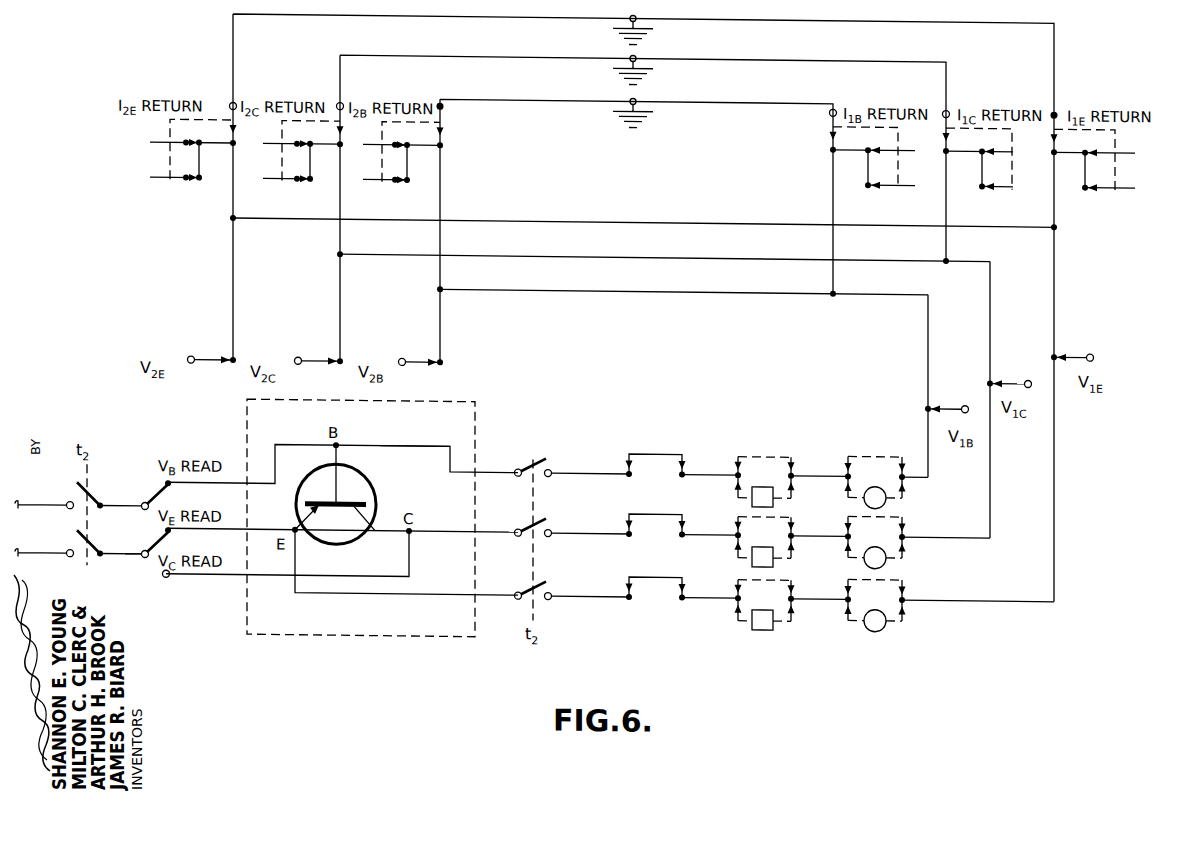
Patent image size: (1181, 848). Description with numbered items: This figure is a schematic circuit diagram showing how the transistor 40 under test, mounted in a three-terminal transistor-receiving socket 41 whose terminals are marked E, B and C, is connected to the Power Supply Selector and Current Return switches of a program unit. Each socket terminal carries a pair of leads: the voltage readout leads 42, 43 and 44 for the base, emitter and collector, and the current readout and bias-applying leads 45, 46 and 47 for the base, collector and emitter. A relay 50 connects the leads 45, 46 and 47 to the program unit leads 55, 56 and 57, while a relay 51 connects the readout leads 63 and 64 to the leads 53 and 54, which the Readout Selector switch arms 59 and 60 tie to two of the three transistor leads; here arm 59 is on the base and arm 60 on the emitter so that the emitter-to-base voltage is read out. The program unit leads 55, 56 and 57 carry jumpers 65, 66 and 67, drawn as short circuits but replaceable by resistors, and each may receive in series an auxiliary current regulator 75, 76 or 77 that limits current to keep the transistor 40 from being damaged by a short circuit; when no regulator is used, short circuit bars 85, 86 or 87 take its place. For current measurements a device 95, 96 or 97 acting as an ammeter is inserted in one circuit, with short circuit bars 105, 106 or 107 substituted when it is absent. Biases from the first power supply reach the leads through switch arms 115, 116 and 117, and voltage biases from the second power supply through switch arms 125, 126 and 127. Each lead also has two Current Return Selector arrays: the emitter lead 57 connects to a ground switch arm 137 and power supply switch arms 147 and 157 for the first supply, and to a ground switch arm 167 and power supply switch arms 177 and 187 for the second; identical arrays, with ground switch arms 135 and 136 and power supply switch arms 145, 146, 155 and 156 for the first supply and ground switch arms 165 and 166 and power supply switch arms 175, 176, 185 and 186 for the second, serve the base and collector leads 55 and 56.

The transistor 40 is at (376, 490).
The transistor-receiving socket 41 is at (370, 636).
The base voltage readout lead 42 is at (300, 443).
The emitter voltage readout lead 43 is at (255, 529).
The collector voltage readout lead 44 is at (196, 578).
The base current readout and bias-applying lead 45 is at (380, 444).
The collector current readout and bias-applying lead 46 is at (418, 532).
The emitter current readout and bias-applying lead 47 is at (404, 593).
The relay 50 is at (533, 513).
The relay 51 is at (90, 540).
The lead 53 is at (120, 507).
The lead 54 is at (132, 556).
The base program unit lead 55 is at (630, 288).
The collector program unit lead 56 is at (678, 254).
The emitter program unit lead 57 is at (704, 219).
The Readout Selector switch arm 59 is at (157, 497).
The Readout Selector switch arm 60 is at (157, 543).
The readout lead 63 is at (54, 493).
The readout lead 64 is at (42, 556).
The jumper 65 is at (656, 449).
The jumper 66 is at (640, 509).
The jumper 67 is at (640, 572).
The auxiliary current regulator 75 is at (768, 481).
The auxiliary current regulator 76 is at (768, 541).
The auxiliary current regulator 77 is at (763, 624).
The short circuit bar 85 is at (790, 453).
The short circuit bar 86 is at (792, 512).
The short circuit bar 87 is at (782, 576).
The ammeter device 95 is at (878, 480).
The ammeter device 96 is at (878, 540).
The ammeter device 97 is at (872, 625).
The short circuit bar 105 is at (880, 450).
The short circuit bar 106 is at (900, 511).
The short circuit bar 107 is at (900, 574).
The switch arm 115 is at (952, 400).
The switch arm 116 is at (1021, 357).
The switch arm 117 is at (1073, 347).
The switch arm 125 is at (393, 356).
The switch arm 126 is at (293, 356).
The switch arm 127 is at (206, 356).
The I1B return terminal 135 is at (830, 111).
The I1C return terminal 136 is at (950, 103).
The ground switch arm 137 is at (1058, 103).
The current source 145 is at (905, 143).
The current source 146 is at (1010, 143).
The power supply switch arm 147 is at (1116, 143).
The current source 155 is at (893, 178).
The current source 156 is at (1005, 178).
The power supply switch arm 157 is at (1110, 178).
The I2B return terminal 165 is at (447, 125).
The I2C return terminal 166 is at (343, 102).
The ground switch arm 167 is at (237, 103).
The current source 175 is at (391, 151).
The current source 176 is at (275, 143).
The power supply switch arm 177 is at (161, 143).
The current source 185 is at (375, 178).
The current source 186 is at (275, 178).
The power supply switch arm 187 is at (162, 178).